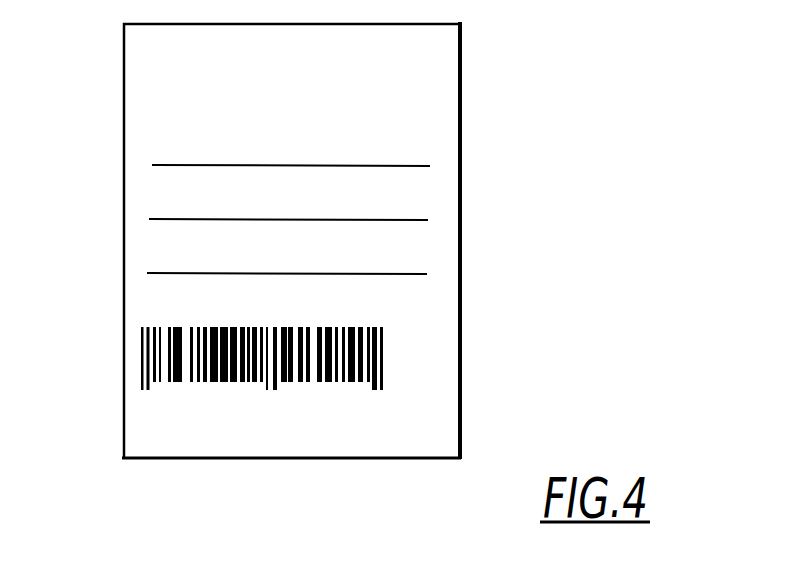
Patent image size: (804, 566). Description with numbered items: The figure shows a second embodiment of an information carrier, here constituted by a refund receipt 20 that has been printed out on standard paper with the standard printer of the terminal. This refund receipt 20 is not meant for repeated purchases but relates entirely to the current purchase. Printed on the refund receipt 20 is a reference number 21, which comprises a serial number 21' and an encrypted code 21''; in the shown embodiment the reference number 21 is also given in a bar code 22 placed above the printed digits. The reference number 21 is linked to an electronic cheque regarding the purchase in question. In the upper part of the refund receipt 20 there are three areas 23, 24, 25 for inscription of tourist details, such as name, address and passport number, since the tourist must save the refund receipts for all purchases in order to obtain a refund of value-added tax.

The refund receipt 20 is at (440, 118).
The reference number 21 is at (197, 439).
The serial number 21' is at (194, 465).
The encrypted code 21'' is at (325, 465).
The bar code 22 is at (140, 359).
The area for inscription of tourist details 23 is at (403, 163).
The area for inscription of tourist details 24 is at (403, 218).
The area for inscription of tourist details 25 is at (403, 273).